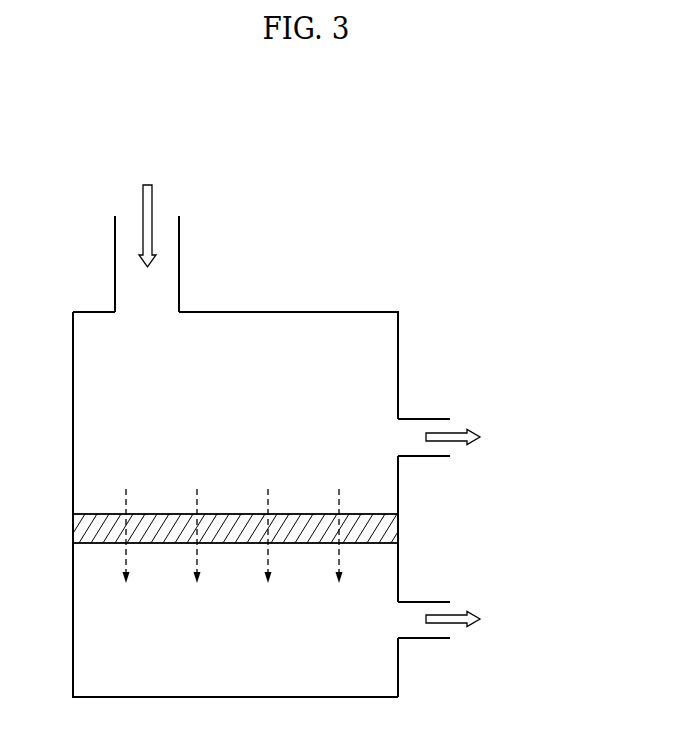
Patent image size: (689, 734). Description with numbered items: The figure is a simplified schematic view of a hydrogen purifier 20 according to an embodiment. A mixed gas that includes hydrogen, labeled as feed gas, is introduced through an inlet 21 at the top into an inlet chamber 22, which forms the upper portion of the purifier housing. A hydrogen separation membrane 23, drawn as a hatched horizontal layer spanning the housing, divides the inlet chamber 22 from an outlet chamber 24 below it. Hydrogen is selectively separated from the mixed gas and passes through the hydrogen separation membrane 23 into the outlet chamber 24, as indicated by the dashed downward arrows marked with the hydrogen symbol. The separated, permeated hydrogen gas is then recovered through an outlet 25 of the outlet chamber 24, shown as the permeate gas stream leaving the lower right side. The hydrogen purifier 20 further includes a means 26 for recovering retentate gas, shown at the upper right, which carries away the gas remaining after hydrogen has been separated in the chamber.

The hydrogen purifier 20 is at (362, 232).
The inlet 21 is at (129, 222).
The inlet chamber 22 is at (90, 436).
The hydrogen separation membrane 23 is at (90, 529).
The outlet chamber 24 is at (90, 595).
The outlet 25 is at (447, 630).
The means for recovering retentate gas 26 is at (447, 427).